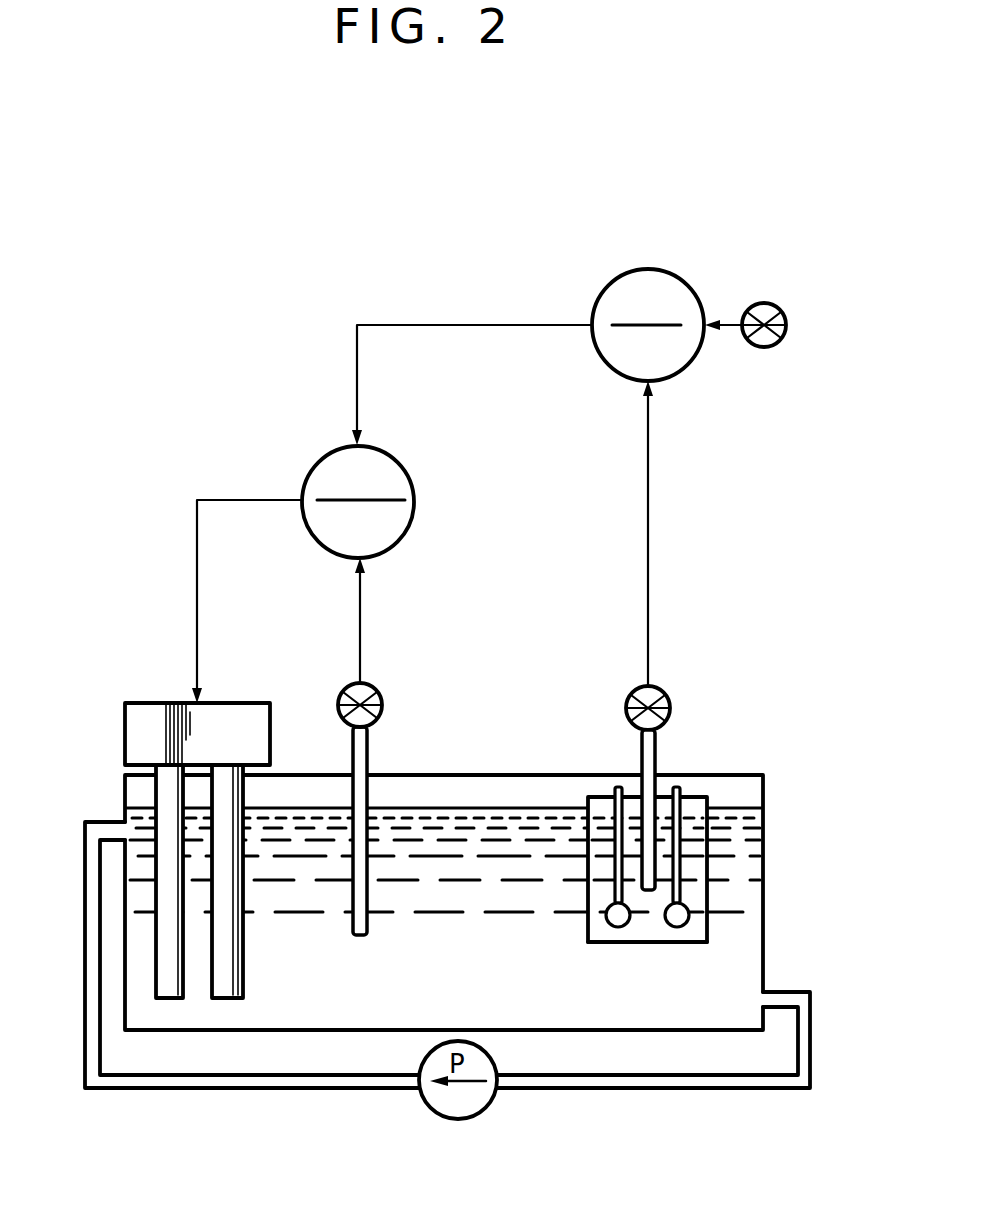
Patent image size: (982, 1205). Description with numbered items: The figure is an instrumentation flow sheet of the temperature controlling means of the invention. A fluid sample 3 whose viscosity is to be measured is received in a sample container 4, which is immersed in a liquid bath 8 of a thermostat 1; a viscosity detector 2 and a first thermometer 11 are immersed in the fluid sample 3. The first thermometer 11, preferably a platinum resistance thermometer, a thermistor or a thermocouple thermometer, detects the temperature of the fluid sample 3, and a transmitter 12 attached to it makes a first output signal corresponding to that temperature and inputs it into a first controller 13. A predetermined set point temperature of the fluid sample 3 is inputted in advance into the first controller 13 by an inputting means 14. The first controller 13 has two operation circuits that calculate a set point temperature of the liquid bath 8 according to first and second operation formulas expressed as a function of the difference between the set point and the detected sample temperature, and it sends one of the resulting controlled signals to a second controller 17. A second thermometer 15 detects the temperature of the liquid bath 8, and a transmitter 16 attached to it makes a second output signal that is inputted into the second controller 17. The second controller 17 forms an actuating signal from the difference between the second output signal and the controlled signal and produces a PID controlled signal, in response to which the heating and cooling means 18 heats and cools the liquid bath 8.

The thermostat 1 is at (768, 934).
The viscosity detector 2 is at (611, 806).
The fluid sample 3 is at (602, 862).
The sample container 4 is at (707, 923).
The liquid bath 8 is at (742, 867).
The first thermometer 11 is at (668, 734).
The transmitter 12 is at (661, 691).
The first controller 13 is at (682, 272).
The inputting means 14 is at (759, 348).
The second thermometer 15 is at (380, 736).
The transmitter 16 is at (372, 683).
The second controller 17 is at (318, 458).
The heating and cooling means 18 is at (157, 703).